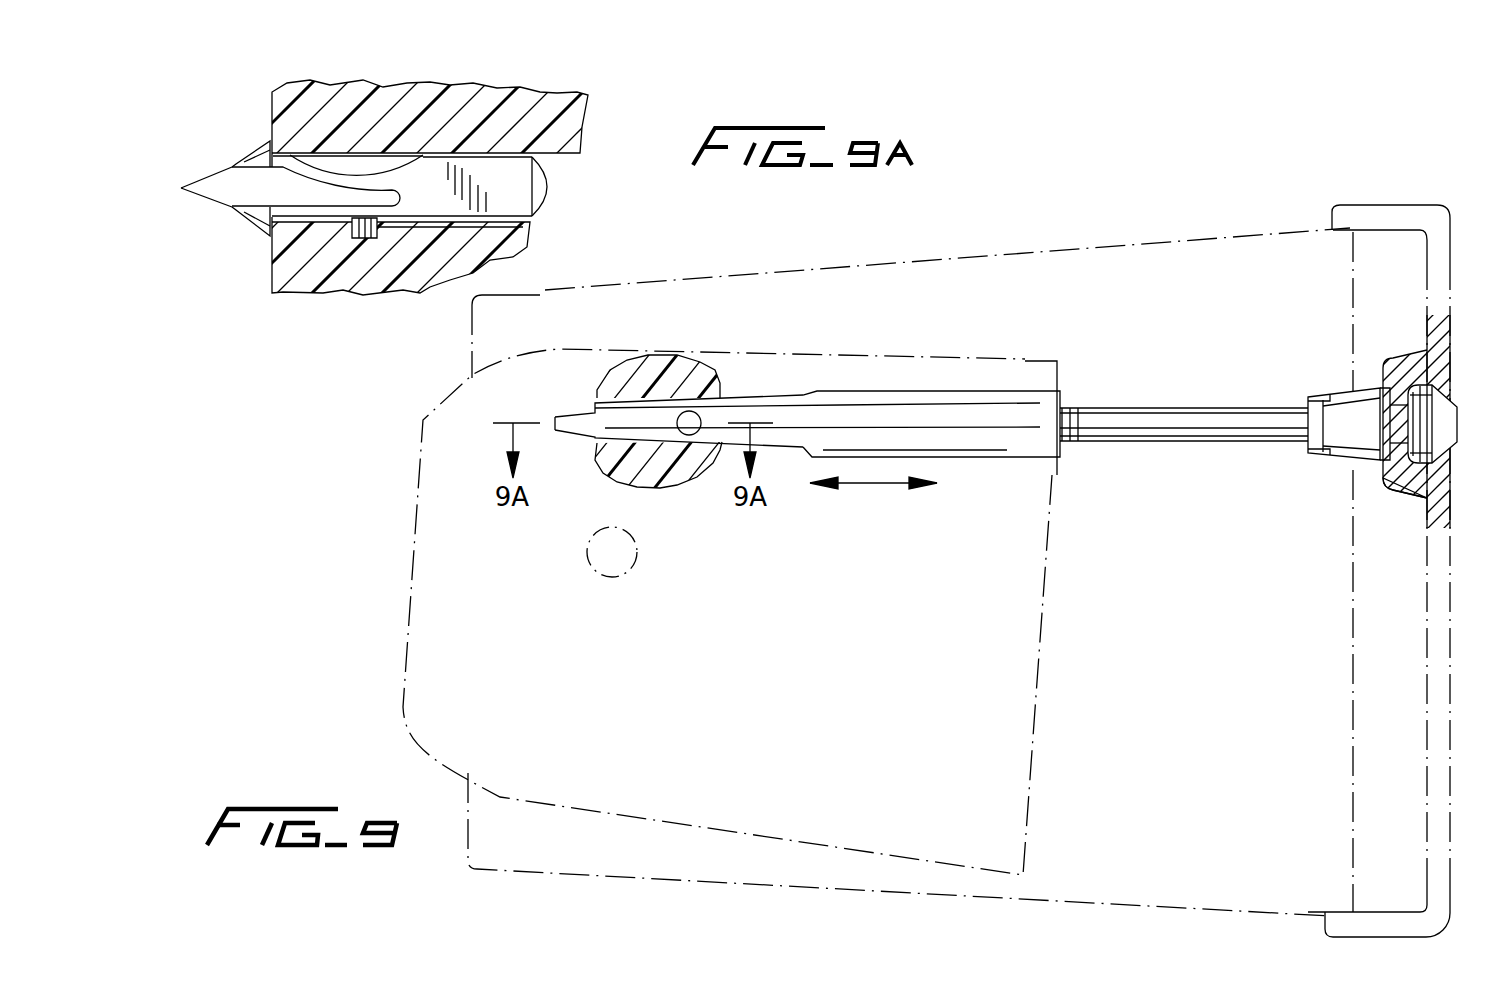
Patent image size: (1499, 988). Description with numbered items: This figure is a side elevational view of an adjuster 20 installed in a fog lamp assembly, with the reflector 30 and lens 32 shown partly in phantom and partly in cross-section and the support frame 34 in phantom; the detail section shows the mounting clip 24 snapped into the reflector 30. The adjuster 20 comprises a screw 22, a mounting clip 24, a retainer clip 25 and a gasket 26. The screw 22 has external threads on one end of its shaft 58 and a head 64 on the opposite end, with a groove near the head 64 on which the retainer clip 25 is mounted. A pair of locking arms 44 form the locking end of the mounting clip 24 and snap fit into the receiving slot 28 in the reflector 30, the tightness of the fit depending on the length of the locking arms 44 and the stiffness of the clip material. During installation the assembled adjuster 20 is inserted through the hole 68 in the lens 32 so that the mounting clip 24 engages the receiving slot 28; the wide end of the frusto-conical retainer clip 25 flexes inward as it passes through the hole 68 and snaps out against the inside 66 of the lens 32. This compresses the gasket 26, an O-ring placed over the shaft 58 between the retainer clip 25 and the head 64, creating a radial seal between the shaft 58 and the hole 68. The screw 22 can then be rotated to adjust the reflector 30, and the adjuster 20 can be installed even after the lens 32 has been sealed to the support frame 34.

In FIG. 9, the adjuster 20 is at (1122, 352).
In FIG. 9, the screw 22 is at (1190, 460).
In FIG. 9A, the mounting clip 24 is at (512, 185).
In FIG. 9, the mounting clip 24 is at (1010, 437).
In FIG. 9, the retainer clip 25 is at (1332, 417).
In FIG. 9, the gasket 26 is at (1352, 395).
In FIG. 9A, the receiving slot 28 is at (360, 160).
In FIG. 9, the receiving slot 28 is at (597, 400).
In FIG. 9A, the reflector 30 is at (570, 118).
In FIG. 9, the reflector 30 is at (1020, 690).
In FIG. 9, the lens 32 is at (1433, 708).
In FIG. 9, the support frame 34 is at (630, 875).
In FIG. 9A, the locking arms 44 is at (182, 188).
In FIG. 9, the shaft 58 is at (1220, 420).
In FIG. 9, the head 64 is at (1442, 463).
In FIG. 9, the inside 66 is at (1417, 415).
In FIG. 9, the hole 68 is at (1390, 486).